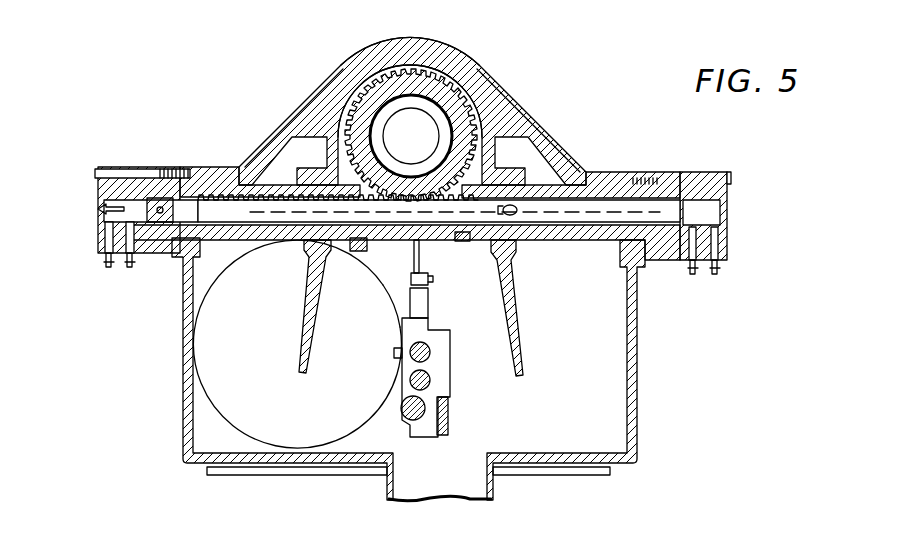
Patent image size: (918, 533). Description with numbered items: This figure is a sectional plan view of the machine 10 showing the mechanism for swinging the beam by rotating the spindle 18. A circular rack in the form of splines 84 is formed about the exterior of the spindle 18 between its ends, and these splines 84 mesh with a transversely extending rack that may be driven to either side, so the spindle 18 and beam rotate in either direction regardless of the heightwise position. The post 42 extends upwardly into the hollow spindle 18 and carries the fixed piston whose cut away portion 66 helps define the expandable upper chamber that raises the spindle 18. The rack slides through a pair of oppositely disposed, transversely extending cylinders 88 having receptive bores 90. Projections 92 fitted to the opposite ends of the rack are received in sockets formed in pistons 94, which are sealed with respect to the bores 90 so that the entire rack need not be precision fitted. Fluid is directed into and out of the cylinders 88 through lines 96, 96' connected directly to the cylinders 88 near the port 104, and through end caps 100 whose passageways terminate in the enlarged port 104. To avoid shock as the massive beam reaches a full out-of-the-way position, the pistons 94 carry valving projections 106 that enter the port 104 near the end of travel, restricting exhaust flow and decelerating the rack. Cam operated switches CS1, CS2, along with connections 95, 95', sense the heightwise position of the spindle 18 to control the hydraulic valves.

The housing 10 is at (332, 107).
The spindle 18 is at (478, 68).
The post 42 is at (345, 61).
The splines 84 is at (387, 66).
The cut away portion 66 is at (237, 210).
The receptive bores 90 is at (598, 195).
The projections 92 is at (160, 200).
The pistons 94 is at (147, 183).
The end cap 100 is at (98, 186).
The port 104 is at (702, 208).
The valving projections 106 is at (100, 212).
The cylinders 88 is at (223, 240).
The terminal 95 is at (742, 256).
The line 96 is at (679, 273).
The terminal 95' is at (93, 267).
The line 96' is at (142, 267).
The cam operated switch CS1 is at (401, 303).
The cam operated switch CS2 is at (430, 305).